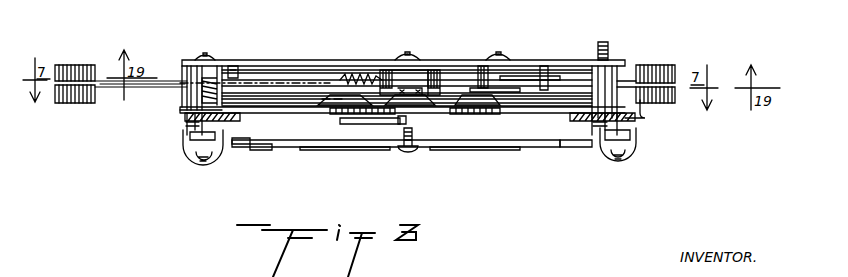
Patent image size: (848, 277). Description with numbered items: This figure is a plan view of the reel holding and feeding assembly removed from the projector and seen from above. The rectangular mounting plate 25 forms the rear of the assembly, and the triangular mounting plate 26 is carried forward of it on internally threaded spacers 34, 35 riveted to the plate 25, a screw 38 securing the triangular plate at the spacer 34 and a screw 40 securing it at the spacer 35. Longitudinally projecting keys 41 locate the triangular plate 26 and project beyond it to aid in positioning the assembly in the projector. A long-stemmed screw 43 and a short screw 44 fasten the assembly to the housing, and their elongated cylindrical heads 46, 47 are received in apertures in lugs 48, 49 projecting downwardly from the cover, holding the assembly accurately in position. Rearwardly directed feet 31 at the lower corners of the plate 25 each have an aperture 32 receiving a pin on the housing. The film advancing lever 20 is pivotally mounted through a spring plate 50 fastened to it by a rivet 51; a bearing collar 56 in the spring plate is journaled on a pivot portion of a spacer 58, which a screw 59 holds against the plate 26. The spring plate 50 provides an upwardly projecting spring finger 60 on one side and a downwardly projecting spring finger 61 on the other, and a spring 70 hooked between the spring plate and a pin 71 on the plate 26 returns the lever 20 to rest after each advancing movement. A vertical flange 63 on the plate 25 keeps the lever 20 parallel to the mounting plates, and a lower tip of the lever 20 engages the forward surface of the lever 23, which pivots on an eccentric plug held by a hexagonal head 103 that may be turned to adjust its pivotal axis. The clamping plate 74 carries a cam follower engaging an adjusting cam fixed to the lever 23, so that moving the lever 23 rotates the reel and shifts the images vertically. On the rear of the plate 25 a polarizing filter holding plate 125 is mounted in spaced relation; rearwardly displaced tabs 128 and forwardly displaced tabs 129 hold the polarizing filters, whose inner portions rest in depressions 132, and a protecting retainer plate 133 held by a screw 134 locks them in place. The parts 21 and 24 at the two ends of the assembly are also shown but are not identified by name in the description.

The film advancing lever 20 is at (620, 83).
The knurled knob 21 is at (666, 67).
The lever 23 is at (118, 86).
The knurled knob 24 is at (78, 65).
The rectangular mounting plate 25 is at (183, 112).
The triangular mounting plate 26 is at (190, 62).
The feet 31 is at (207, 167).
The aperture 32 is at (200, 150).
The internally threaded spacer 34 is at (187, 92).
The internally threaded spacer 35 is at (482, 72).
The screw 38 is at (208, 52).
The screw 40 is at (499, 58).
The keys 41 is at (610, 62).
The long-stemmed screw 43 is at (600, 42).
The short screw 44 is at (212, 80).
The cylindrical head 46 is at (593, 148).
The cylindrical head 47 is at (192, 140).
The lug 48 is at (578, 120).
The lug 49 is at (240, 119).
The spring plate 50 is at (492, 88).
The rivet 51 is at (520, 80).
The bearing collar 56 is at (428, 82).
The spacer 58 is at (400, 80).
The screw 59 is at (408, 57).
The spring finger 60 is at (333, 95).
The spring finger 61 is at (472, 95).
The vertical flange 63 is at (645, 115).
The spring 70 is at (362, 78).
The pin 71 is at (236, 71).
The clamping plate 74 is at (378, 106).
The hexagonal head 103 is at (400, 118).
The polarizing filter holding plate 125 is at (545, 148).
The tabs 128 is at (236, 146).
The tabs 129 is at (260, 150).
The depressions 132 is at (376, 143).
The protecting retainer plate 133 is at (467, 148).
The screw 134 is at (410, 152).